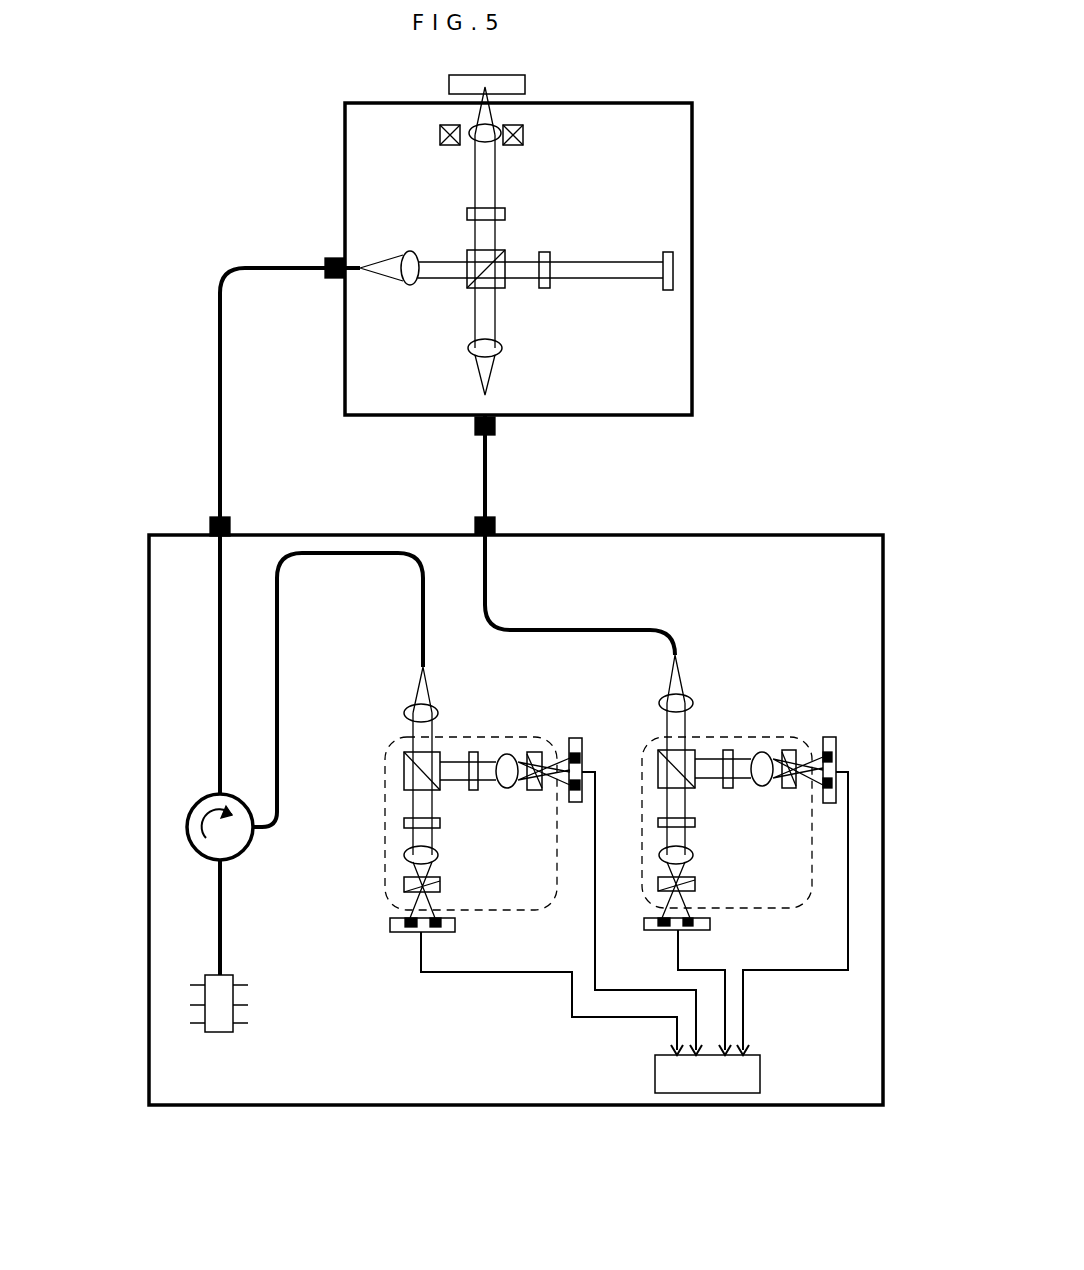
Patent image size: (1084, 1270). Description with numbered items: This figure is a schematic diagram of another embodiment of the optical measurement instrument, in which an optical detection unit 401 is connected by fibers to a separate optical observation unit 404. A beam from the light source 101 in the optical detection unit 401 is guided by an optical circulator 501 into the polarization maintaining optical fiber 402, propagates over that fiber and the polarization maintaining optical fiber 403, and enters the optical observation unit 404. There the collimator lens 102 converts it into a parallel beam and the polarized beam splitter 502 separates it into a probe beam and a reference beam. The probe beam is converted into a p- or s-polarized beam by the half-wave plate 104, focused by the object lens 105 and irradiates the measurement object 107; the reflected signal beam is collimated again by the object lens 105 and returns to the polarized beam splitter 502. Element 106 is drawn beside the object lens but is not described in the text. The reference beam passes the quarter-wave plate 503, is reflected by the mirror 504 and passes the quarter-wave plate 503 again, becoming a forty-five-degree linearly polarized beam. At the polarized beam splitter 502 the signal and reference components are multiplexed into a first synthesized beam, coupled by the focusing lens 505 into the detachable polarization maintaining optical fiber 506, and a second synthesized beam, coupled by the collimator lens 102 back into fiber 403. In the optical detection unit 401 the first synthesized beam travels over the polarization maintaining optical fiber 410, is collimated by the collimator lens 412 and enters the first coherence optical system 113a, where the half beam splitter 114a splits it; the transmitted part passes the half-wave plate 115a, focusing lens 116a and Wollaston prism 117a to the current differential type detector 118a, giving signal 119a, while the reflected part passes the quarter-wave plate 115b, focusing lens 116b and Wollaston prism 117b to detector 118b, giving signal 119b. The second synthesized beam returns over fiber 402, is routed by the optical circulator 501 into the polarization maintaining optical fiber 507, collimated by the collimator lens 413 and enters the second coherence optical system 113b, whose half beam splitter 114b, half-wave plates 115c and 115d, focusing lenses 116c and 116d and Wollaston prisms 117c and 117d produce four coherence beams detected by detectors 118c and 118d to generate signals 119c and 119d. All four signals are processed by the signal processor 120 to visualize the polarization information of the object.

The light source 101 is at (225, 1032).
The collimator lens 102 is at (405, 252).
The λ/2 plate 104 is at (467, 214).
The object lens 105 is at (500, 130).
The scanning mirror 106 is at (523, 137).
The measurement object 107 is at (449, 90).
The first coherence optical system 113a is at (645, 880).
The second coherence optical system 113b is at (395, 740).
The half beam splitter 114a is at (658, 760).
The half beam splitter 114b is at (404, 768).
The λ/2 plate 115a is at (695, 822).
The λ/4 plate 115b is at (728, 750).
The λ/2 plate 115c is at (404, 825).
The λ/2 plate 115d is at (470, 752).
The focusing lens 116a is at (693, 855).
The focusing lens 116b is at (762, 752).
The focusing lens 116c is at (404, 858).
The focusing lens 116d is at (505, 790).
The Wollaston prism 117a is at (695, 880).
The Wollaston prism 117b is at (789, 750).
The Wollaston prism 117c is at (404, 890).
The Wollaston prism 117d is at (528, 752).
The current differential type detector 118a is at (710, 924).
The current differential type detector 118b is at (830, 737).
The detector 118c is at (410, 932).
The detector 118d is at (572, 738).
The signal 119a is at (678, 950).
The signal 119b is at (820, 970).
The signal 119c is at (572, 995).
The signal 119d is at (595, 900).
The signal processor 120 is at (655, 1065).
The optical detection unit 401 is at (149, 925).
The polarization maintaining optical fiber 402 is at (220, 660).
The polarization maintaining optical fiber 403 is at (220, 415).
The optical observation unit 404 is at (345, 140).
The polarization maintaining optical fiber 410 is at (607, 630).
The collimator lens 412 is at (686, 698).
The collimator lens 413 is at (410, 708).
The optical circulator 501 is at (248, 850).
The polarized beam splitter 502 is at (467, 262).
The λ/4 plate 503 is at (545, 252).
The mirror 504 is at (668, 252).
The focusing lens 505 is at (502, 348).
The polarization maintaining optical fiber 506 is at (485, 490).
The polarization maintaining optical fiber 507 is at (423, 585).